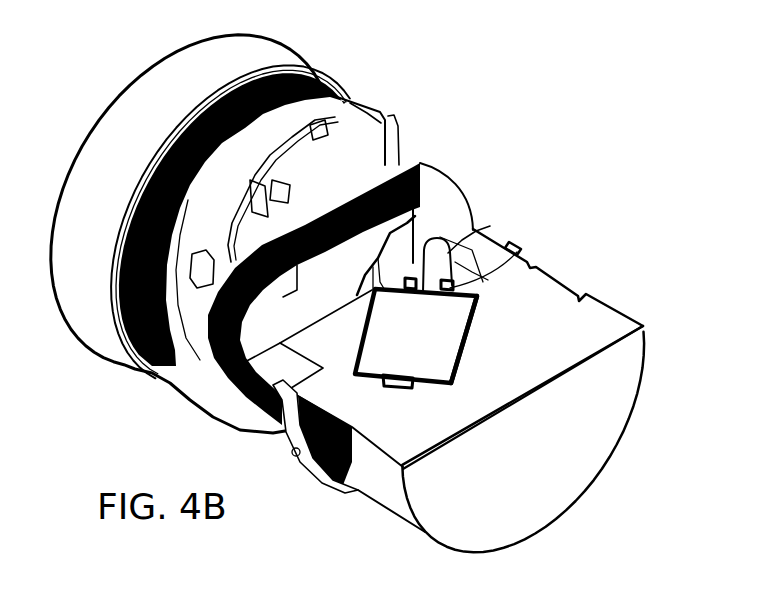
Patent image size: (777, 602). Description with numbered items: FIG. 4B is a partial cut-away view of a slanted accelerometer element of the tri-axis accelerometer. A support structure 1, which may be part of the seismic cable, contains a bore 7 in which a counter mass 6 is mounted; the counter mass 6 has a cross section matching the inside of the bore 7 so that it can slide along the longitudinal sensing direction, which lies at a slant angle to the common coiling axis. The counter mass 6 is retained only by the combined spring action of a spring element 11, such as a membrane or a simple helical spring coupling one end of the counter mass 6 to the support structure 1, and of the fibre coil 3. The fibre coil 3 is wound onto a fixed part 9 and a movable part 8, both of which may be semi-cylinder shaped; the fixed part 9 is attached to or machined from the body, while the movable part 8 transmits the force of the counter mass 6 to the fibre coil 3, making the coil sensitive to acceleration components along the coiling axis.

The support structure 1 is at (548, 331).
The fibre coil 3 is at (425, 163).
The counter mass 6 is at (430, 346).
The bore 7 is at (466, 333).
The movable part 8 is at (453, 207).
The fixed part 9 is at (187, 355).
The spring element 11 is at (517, 250).